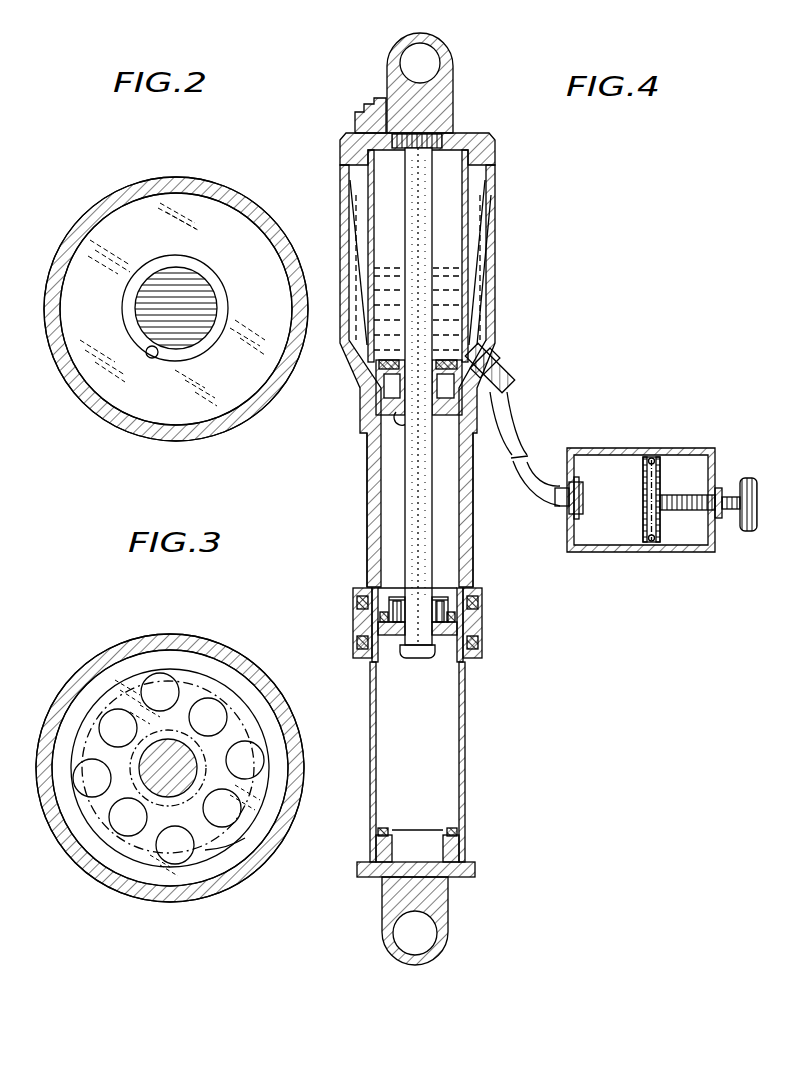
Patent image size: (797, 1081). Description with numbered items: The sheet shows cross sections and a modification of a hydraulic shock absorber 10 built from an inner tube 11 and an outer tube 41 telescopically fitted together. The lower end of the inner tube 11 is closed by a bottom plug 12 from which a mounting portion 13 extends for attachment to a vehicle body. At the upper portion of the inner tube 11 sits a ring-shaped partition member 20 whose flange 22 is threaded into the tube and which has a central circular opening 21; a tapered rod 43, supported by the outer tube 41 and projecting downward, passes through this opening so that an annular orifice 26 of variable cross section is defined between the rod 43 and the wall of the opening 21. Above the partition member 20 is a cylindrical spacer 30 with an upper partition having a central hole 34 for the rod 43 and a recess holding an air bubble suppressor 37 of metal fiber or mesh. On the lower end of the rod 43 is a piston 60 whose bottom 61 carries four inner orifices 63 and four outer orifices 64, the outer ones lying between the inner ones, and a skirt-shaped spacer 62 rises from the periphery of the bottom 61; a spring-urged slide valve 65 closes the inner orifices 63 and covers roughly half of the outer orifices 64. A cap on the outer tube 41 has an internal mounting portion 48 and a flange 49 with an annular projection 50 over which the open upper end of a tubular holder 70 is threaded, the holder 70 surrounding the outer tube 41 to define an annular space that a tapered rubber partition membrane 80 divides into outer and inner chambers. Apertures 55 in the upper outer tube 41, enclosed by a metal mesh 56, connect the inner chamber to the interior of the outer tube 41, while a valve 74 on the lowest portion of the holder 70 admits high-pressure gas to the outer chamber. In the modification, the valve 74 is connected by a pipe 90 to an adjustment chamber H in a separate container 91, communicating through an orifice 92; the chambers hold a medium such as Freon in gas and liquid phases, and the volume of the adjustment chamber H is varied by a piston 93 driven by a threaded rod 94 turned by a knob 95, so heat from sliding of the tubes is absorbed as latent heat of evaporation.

In FIG. 4, the hydraulic shock absorber 10 is at (478, 567).
In FIG. 4, the inner tube 11 is at (465, 755).
In FIG. 4, the bottom plug 12 is at (432, 890).
In FIG. 4, the mounting portion 13 is at (422, 935).
In FIG. 2, the partition member 20 is at (215, 205).
In FIG. 4, the partition member 20 is at (452, 410).
In FIG. 2, the central circular opening 21 is at (153, 358).
In FIG. 2, the flange 22 is at (255, 410).
In FIG. 2, the annular orifice 26 is at (170, 258).
In FIG. 4, the annular orifice 26 is at (396, 418).
In FIG. 4, the cylindrical spacer 30 is at (508, 391).
In FIG. 4, the central hole 34 is at (435, 360).
In FIG. 4, the air bubble suppressor 37 is at (390, 360).
In FIG. 4, the outer tube 41 is at (367, 503).
In FIG. 2, the rod 43 is at (196, 285).
In FIG. 3, the rod 43 is at (170, 765).
In FIG. 4, the rod 43 is at (420, 523).
In FIG. 4, the internal mounting portion 48 is at (428, 60).
In FIG. 4, the flange 49 is at (470, 133).
In FIG. 4, the annular projection 50 is at (345, 185).
In FIG. 4, the apertures 55 is at (475, 268).
In FIG. 4, the mesh or network 56 is at (482, 198).
In FIG. 3, the piston 60 is at (150, 890).
In FIG. 4, the piston 60 is at (452, 648).
In FIG. 3, the bottom 61 is at (107, 688).
In FIG. 3, the skirt-shaped spacer 62 is at (280, 715).
In FIG. 3, the orifices 63 is at (118, 728).
In FIG. 4, the orifices 63 is at (432, 636).
In FIG. 3, the orifices 64 is at (160, 692).
In FIG. 4, the orifices 64 is at (383, 625).
In FIG. 3, the slide valve 65 is at (245, 860).
In FIG. 4, the slide valve 65 is at (447, 612).
In FIG. 4, the tubular holder 70 is at (496, 210).
In FIG. 4, the valve 74 is at (505, 365).
In FIG. 4, the partition membrane 80 is at (470, 315).
In FIG. 4, the pipe 90 is at (530, 472).
In FIG. 4, the container 91 is at (668, 448).
In FIG. 4, the orifice 92 is at (585, 506).
In FIG. 4, the piston 93 is at (652, 510).
In FIG. 4, the threaded rod 94 is at (688, 495).
In FIG. 4, the knob 95 is at (750, 531).
In FIG. 4, the adjustment chamber H is at (612, 471).